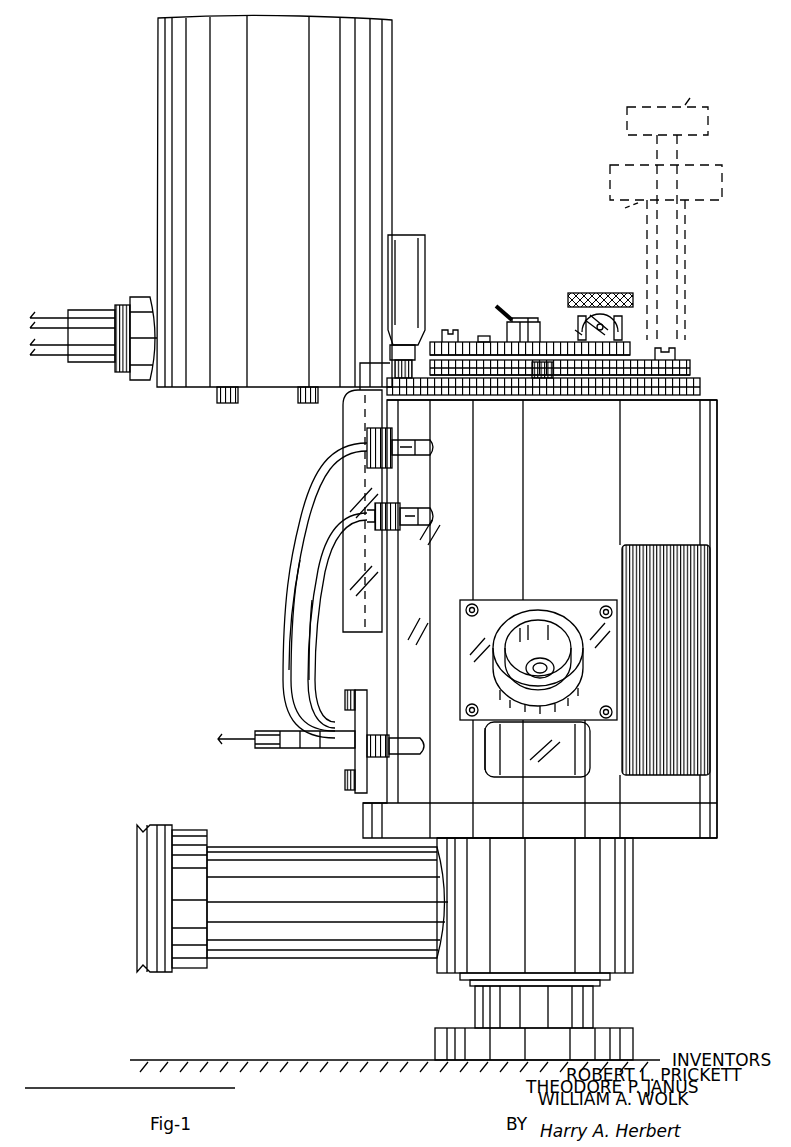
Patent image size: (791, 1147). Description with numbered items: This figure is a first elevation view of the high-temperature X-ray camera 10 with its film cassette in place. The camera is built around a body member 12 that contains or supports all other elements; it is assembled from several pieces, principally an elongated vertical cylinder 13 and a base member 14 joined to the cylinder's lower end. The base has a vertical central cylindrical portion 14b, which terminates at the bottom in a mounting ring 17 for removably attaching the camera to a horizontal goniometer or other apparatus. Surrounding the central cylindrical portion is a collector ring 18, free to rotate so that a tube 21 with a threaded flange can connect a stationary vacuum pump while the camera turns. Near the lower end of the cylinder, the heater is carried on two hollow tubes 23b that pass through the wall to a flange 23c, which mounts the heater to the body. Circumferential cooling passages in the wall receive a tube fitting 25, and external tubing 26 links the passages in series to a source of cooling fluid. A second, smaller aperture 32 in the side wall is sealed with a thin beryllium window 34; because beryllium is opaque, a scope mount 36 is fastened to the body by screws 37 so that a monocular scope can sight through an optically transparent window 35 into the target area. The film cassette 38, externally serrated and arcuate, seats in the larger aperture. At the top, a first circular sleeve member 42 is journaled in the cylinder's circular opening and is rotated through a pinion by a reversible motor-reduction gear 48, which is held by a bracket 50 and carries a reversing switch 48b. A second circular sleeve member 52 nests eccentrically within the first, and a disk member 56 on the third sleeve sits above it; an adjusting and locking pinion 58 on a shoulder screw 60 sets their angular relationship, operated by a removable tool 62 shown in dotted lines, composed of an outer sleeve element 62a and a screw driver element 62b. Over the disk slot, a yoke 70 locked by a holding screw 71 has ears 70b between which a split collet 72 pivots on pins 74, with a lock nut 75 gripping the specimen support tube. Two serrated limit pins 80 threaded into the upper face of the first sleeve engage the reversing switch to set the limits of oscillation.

The camera 10 is at (278, 518).
The body member 12 is at (720, 432).
The vertical cylinder 13 is at (720, 476).
The base member 14 is at (678, 844).
The central cylindrical portion 14b is at (595, 1002).
The mounting ring 17 is at (625, 1040).
The collector ring 18 is at (634, 934).
The tube 21 is at (300, 958).
The hollow tubes 23b is at (295, 731).
The flange 23c is at (355, 764).
The tube fitting 25 is at (410, 508).
The external tubing 26 is at (336, 470).
The second aperture 32 is at (548, 778).
The beryllium window 34 is at (510, 773).
The optically transparent window 35 is at (542, 666).
The scope mount 36 is at (538, 608).
The screws 37 is at (473, 606).
The film cassette 38 is at (712, 590).
The first circular sleeve member 42 is at (702, 387).
The motor-reduction gear 48 is at (285, 195).
The reversing switch 48b is at (410, 235).
The bracket 50 is at (345, 430).
The second circular sleeve member 52 is at (503, 376).
The disk member 56 is at (484, 342).
The pinion 58 is at (436, 342).
The shoulder screw 60 is at (452, 330).
The removable tool 62 is at (632, 152).
The outer sleeve element 62a is at (646, 202).
The screw driver element 62b is at (690, 97).
The yoke 70 is at (548, 342).
The ears 70b is at (610, 336).
The holding screw 71 is at (518, 318).
The split collet 72 is at (604, 327).
The pins 74 is at (582, 334).
The lock nut 75 is at (595, 293).
The limit pins 80 is at (392, 372).